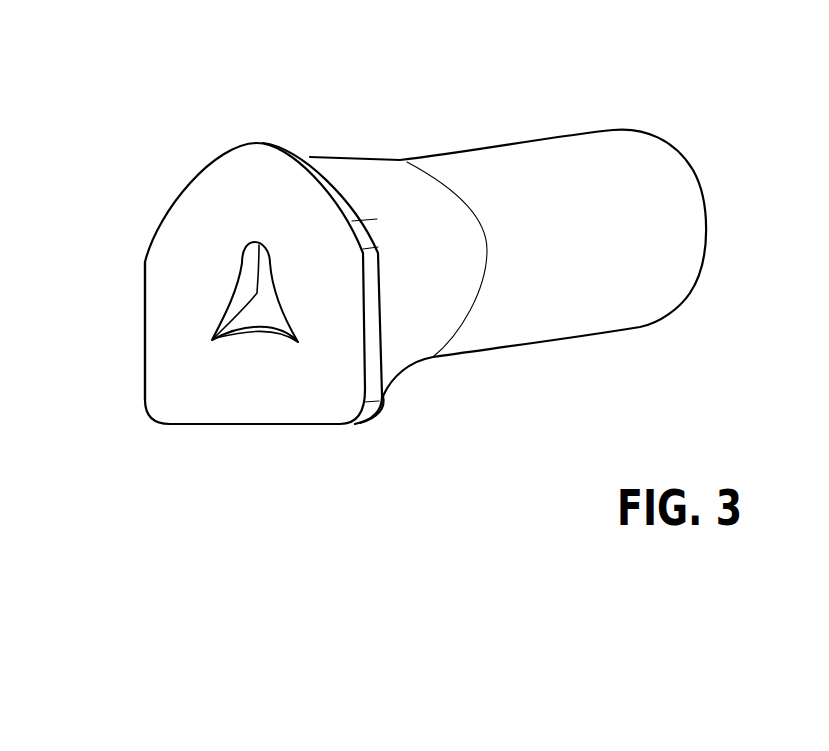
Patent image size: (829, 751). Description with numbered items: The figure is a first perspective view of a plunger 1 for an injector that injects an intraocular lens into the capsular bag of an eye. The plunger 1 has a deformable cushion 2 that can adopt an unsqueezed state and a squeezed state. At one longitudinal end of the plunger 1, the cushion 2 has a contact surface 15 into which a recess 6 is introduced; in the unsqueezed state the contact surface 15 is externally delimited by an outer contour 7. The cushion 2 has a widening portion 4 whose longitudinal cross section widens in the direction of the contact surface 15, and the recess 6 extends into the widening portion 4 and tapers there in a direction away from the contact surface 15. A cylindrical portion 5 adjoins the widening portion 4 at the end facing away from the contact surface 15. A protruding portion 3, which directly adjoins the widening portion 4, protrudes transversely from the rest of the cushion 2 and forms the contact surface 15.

The plunger 1 is at (300, 81).
The deformable cushion 2 is at (441, 399).
The protruding portion 3 is at (375, 413).
The widening portion 4 is at (337, 157).
The cylindrical portion 5 is at (530, 141).
The recess 6 is at (263, 291).
The outer contour 7 is at (147, 309).
The contact surface 15 is at (163, 360).